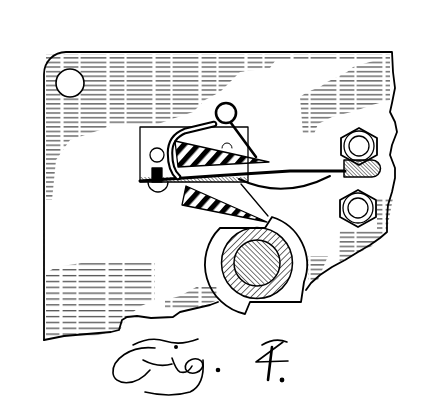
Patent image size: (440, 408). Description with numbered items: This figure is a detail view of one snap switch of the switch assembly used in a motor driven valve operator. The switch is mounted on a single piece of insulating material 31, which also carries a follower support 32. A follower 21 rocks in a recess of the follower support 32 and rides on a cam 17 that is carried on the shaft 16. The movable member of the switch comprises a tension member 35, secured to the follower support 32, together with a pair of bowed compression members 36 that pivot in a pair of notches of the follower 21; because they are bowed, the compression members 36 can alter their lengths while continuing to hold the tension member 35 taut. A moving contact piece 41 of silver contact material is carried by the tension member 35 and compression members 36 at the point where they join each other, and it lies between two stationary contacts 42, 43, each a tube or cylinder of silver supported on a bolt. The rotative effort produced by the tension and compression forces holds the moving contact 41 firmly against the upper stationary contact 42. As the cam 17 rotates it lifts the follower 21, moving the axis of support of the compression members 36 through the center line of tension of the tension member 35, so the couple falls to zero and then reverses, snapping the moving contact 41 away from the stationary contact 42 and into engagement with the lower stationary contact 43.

The insulating material 31 is at (203, 65).
The follower support 32 is at (152, 148).
The tension member 35 is at (285, 170).
The compression members 36 is at (290, 187).
The follower 21 is at (186, 211).
The cam 17 is at (207, 267).
The shaft 16 is at (268, 265).
The stationary contact 42 is at (364, 135).
The moving contact piece 41 is at (378, 163).
The stationary contact 43 is at (376, 204).